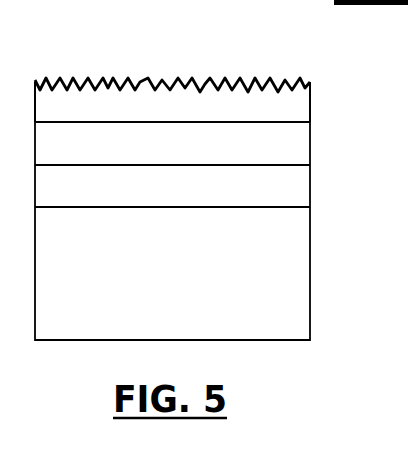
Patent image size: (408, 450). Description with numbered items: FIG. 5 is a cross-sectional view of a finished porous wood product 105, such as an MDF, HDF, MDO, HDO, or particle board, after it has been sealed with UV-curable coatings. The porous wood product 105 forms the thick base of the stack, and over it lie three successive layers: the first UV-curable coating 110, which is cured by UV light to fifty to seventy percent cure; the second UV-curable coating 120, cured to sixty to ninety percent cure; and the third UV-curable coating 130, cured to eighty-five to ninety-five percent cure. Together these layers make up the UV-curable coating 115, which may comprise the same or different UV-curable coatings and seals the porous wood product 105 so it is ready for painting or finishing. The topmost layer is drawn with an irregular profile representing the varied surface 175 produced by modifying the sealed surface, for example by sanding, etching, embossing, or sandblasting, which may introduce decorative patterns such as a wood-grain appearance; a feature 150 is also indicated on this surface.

The porous wood product 105 is at (89, 327).
The first UV-curable coating 110 is at (89, 198).
The second UV-curable coating 120 is at (89, 154).
The third UV-curable coating 130 is at (89, 114).
The UV-curable coating 115 is at (323, 80).
The texture features 150 is at (202, 98).
The varied surface 175 is at (148, 80).